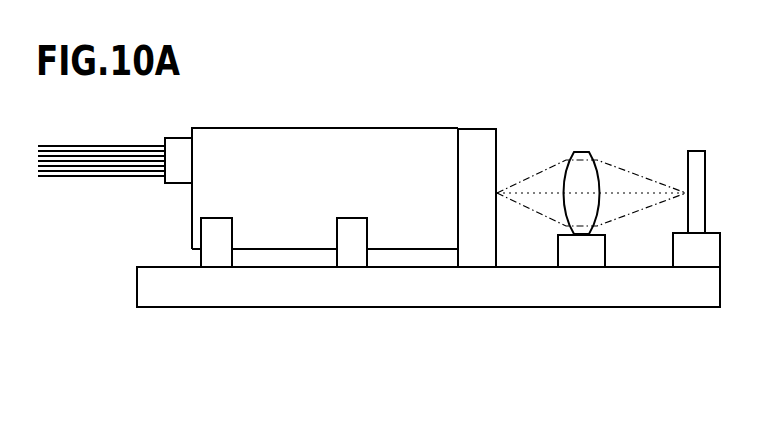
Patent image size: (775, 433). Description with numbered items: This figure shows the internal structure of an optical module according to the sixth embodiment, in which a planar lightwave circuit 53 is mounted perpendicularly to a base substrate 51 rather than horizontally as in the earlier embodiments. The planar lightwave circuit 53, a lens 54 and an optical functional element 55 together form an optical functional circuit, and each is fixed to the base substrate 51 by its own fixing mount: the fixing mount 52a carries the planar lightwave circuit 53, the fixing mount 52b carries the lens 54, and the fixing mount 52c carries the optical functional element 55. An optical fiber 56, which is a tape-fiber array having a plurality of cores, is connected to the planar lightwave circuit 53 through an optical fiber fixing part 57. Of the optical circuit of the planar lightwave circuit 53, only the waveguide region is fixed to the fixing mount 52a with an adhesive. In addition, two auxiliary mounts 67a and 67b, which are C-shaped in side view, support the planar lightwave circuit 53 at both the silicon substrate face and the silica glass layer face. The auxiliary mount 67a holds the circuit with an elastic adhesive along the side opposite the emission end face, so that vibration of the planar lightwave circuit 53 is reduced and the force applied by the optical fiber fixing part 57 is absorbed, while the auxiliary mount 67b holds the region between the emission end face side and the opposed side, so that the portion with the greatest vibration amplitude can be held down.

The base substrate 51 is at (721, 289).
The fixing mount 52a is at (477, 137).
The fixing mount 52b is at (578, 252).
The fixing mount 52c is at (721, 250).
The planar lightwave circuit 53 is at (331, 128).
The lens 54 is at (581, 152).
The optical functional element 55 is at (697, 151).
The optical fiber 56 is at (77, 142).
The optical fiber fixing part 57 is at (181, 138).
The auxiliary mount 67a is at (215, 220).
The auxiliary mount 67b is at (352, 220).